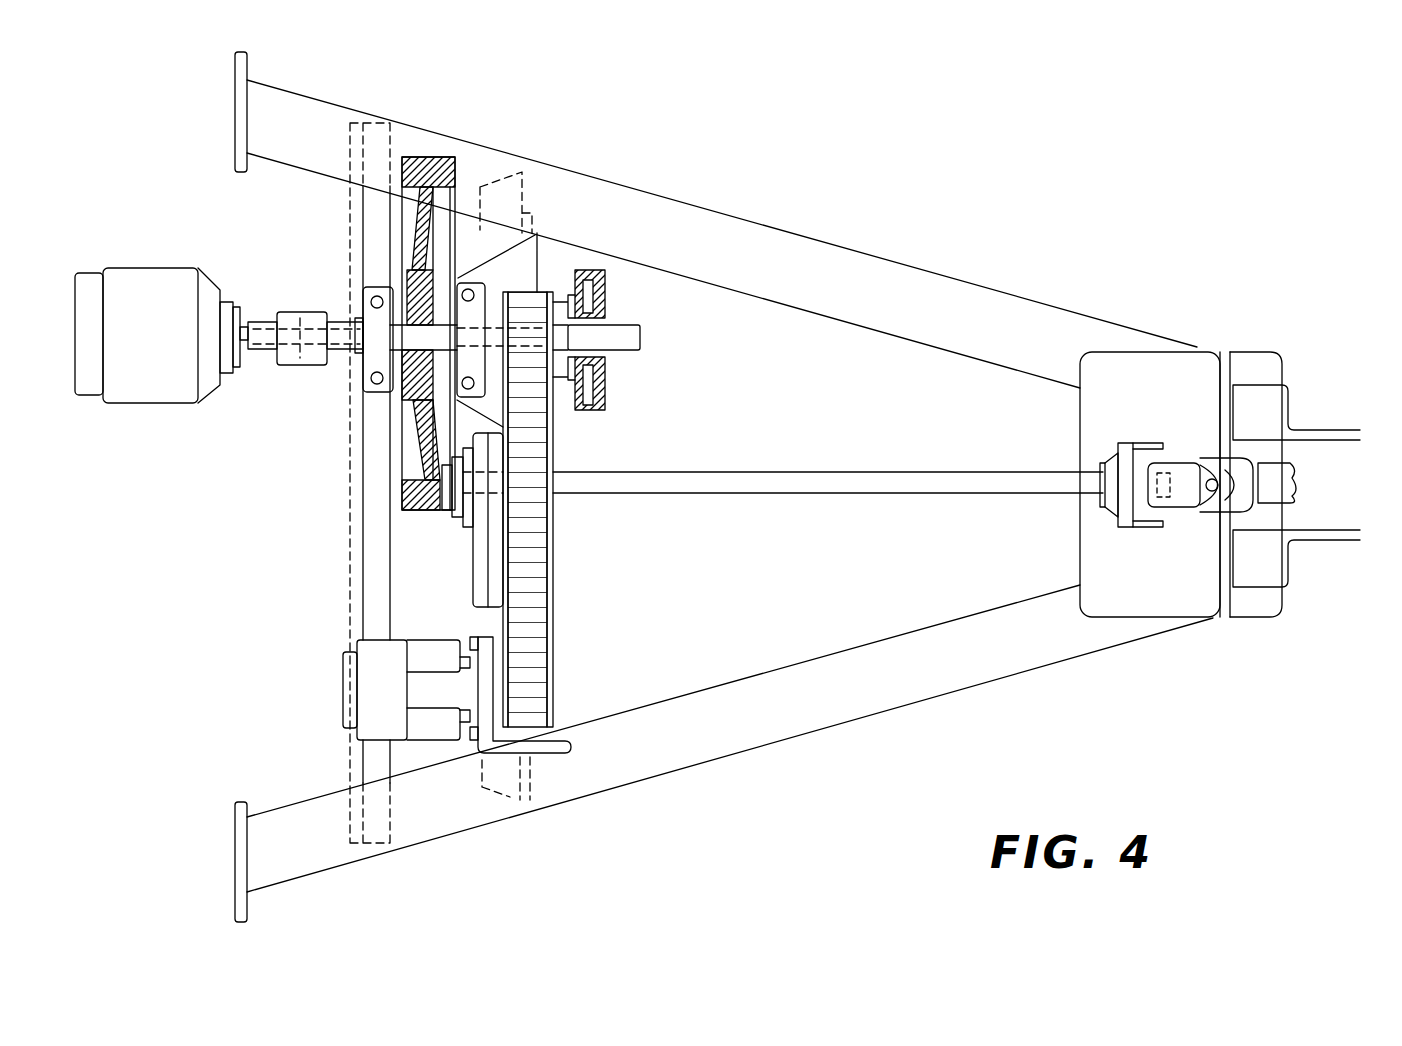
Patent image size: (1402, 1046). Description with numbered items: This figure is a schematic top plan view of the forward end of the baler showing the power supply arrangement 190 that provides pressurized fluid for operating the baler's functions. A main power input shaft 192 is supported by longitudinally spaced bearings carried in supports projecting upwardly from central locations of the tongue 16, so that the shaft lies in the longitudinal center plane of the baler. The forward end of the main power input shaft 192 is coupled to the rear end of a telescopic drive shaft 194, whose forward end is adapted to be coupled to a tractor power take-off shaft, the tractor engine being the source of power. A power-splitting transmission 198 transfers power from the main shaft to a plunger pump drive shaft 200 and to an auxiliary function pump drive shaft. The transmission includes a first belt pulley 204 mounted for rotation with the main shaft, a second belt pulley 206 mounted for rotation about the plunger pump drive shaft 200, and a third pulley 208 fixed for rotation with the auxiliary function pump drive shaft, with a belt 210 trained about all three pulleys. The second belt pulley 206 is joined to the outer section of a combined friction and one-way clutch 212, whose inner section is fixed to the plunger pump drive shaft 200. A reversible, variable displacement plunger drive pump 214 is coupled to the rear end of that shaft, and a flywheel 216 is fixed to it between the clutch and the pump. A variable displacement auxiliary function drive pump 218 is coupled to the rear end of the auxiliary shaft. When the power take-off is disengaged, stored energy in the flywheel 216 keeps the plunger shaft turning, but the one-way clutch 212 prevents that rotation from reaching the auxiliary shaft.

The tongue 16 is at (752, 751).
The power supply arrangement 190 is at (753, 400).
The main power input shaft 192 is at (777, 473).
The telescopic drive shaft 194 is at (1298, 504).
The power-splitting transmission 198 is at (558, 445).
The shaft 200 is at (640, 337).
The first belt pulley 204 is at (557, 570).
The second belt pulley 206 is at (553, 293).
The third pulley 208 is at (557, 672).
The belt 210 is at (557, 630).
The combined friction and one-way clutch 212 is at (607, 382).
The plunger drive pump 214 is at (180, 267).
The flywheel 216 is at (418, 157).
The auxiliary function drive pump 218 is at (440, 742).